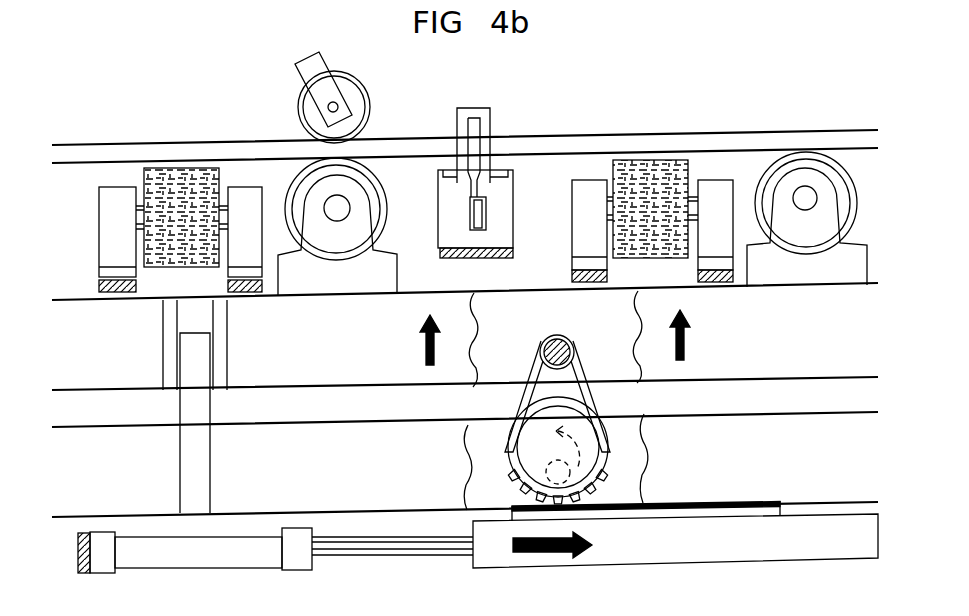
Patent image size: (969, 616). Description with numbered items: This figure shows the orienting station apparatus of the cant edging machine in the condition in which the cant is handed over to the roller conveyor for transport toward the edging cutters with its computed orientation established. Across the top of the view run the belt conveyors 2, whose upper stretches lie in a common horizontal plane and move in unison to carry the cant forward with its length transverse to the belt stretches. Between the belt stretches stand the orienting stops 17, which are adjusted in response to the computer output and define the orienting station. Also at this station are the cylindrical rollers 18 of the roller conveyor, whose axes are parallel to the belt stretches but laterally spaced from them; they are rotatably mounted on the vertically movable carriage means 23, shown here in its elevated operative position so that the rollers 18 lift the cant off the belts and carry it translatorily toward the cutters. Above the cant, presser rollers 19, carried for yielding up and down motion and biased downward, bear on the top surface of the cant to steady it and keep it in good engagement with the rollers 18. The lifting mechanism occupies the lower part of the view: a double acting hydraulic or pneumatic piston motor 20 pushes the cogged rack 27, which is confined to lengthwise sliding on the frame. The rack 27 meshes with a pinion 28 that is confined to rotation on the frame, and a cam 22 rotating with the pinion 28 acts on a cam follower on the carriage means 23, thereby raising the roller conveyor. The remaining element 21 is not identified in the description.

The belt conveyors 2 is at (186, 182).
The orienting stops 17 is at (485, 128).
The cylindrical rollers 18 is at (373, 192).
The presser rollers 19 is at (355, 93).
The double acting hydraulic or pneumatic piston motor 20 is at (195, 548).
The carriage 21 is at (658, 473).
The cam 22 is at (563, 493).
The vertically movable carriage means 23 is at (820, 348).
The cogged rack 27 is at (708, 502).
The pinion 28 is at (593, 493).